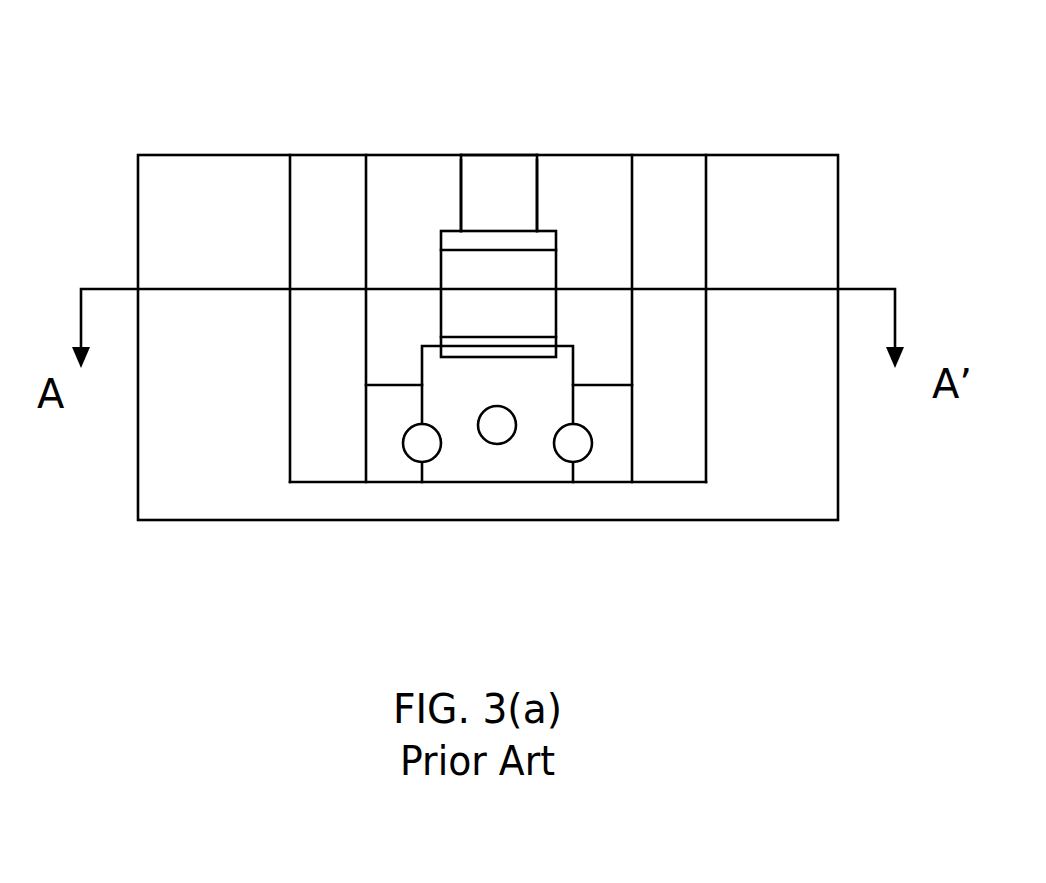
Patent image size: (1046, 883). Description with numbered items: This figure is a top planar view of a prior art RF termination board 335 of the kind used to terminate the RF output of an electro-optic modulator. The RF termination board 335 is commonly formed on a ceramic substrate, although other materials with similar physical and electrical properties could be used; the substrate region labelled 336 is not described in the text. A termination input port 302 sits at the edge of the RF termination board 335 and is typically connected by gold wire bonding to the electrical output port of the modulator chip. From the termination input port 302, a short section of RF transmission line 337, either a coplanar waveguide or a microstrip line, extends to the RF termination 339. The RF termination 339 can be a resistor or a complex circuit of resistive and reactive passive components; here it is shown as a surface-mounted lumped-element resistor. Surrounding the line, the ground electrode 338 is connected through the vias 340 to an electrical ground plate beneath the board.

The RF termination board 335 is at (194, 124).
The body 336 is at (780, 462).
The ground electrode 338 is at (347, 462).
The termination input port 302 is at (482, 154).
The RF transmission line 337 is at (495, 193).
The RF termination 339 is at (517, 270).
The vias 340 is at (578, 450).